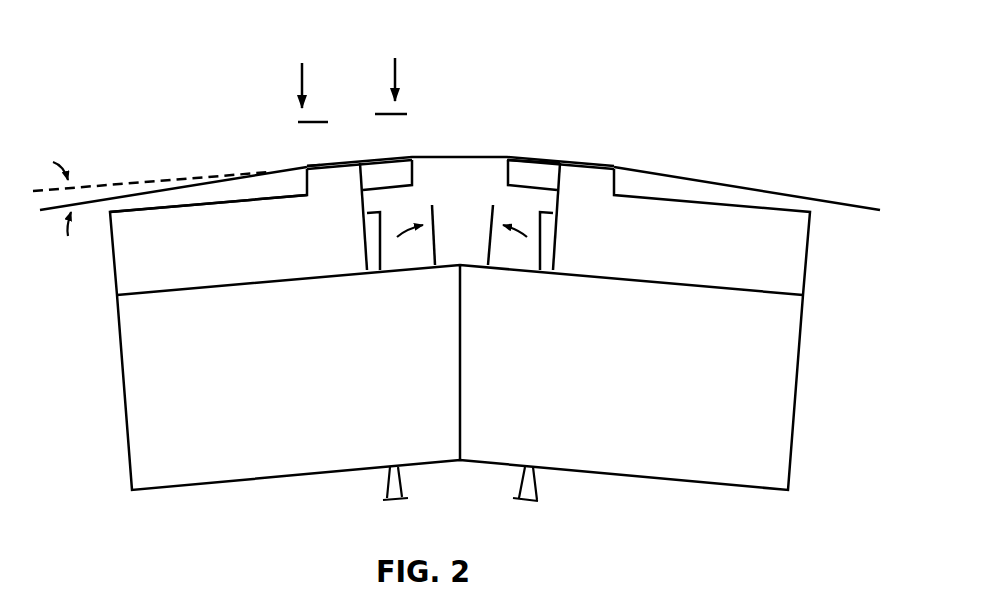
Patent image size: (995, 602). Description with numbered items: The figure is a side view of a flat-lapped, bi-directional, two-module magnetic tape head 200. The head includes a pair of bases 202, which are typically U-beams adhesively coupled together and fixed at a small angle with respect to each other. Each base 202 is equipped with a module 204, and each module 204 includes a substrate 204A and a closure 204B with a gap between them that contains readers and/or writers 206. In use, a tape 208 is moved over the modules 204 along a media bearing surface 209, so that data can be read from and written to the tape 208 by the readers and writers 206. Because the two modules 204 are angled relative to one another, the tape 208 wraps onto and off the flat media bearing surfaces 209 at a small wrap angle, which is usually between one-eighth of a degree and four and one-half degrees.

The magnetic tape head 200 is at (158, 114).
The base 202 is at (119, 367).
The module 204 is at (110, 262).
The substrate 204A is at (177, 235).
The closure 204B is at (508, 173).
The readers and/or writers 206 is at (366, 148).
The tape 208 is at (718, 180).
The media bearing surface 209 is at (308, 156).